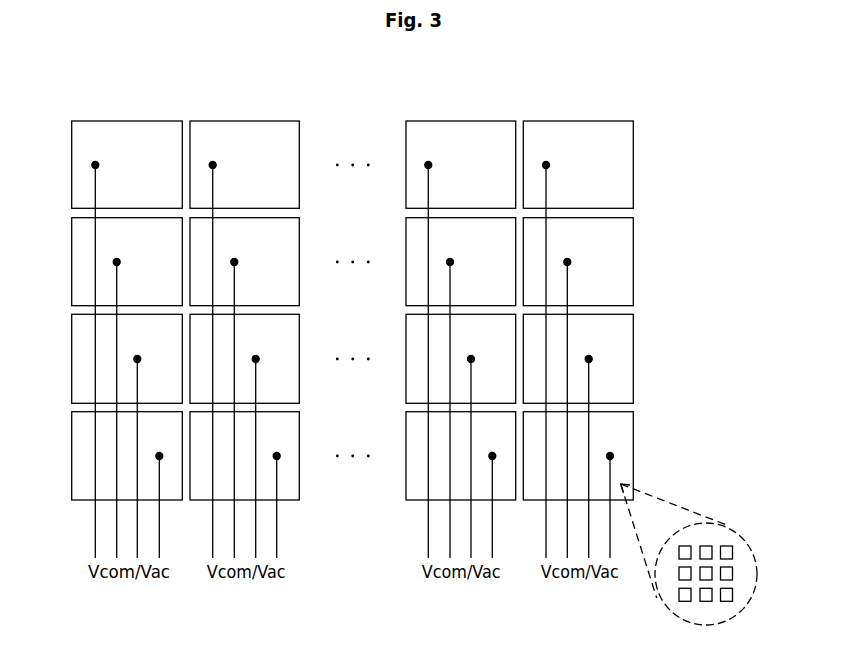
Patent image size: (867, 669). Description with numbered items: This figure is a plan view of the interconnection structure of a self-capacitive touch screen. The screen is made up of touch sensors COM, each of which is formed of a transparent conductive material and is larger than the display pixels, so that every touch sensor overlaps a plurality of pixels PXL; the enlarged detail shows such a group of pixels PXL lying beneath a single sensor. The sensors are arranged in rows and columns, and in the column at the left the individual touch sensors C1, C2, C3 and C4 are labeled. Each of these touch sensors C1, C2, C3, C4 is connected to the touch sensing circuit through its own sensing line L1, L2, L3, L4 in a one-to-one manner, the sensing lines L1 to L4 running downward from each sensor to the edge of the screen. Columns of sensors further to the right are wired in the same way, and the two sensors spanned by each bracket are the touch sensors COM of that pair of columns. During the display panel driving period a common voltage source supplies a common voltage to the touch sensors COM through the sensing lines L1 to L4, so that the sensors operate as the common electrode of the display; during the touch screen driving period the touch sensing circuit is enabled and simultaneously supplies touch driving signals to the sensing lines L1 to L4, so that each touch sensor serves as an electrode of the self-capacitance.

The touch sensor C1 is at (137, 150).
The touch sensor C2 is at (137, 248).
The touch sensor C3 is at (169, 345).
The touch sensor C4 is at (169, 442).
The touch sensors COM is at (212, 121).
The sensing line L1 is at (96, 190).
The sensing line L2 is at (117, 288).
The sensing line L3 is at (137, 385).
The sensing line L4 is at (160, 481).
The pixels PXL is at (732, 574).